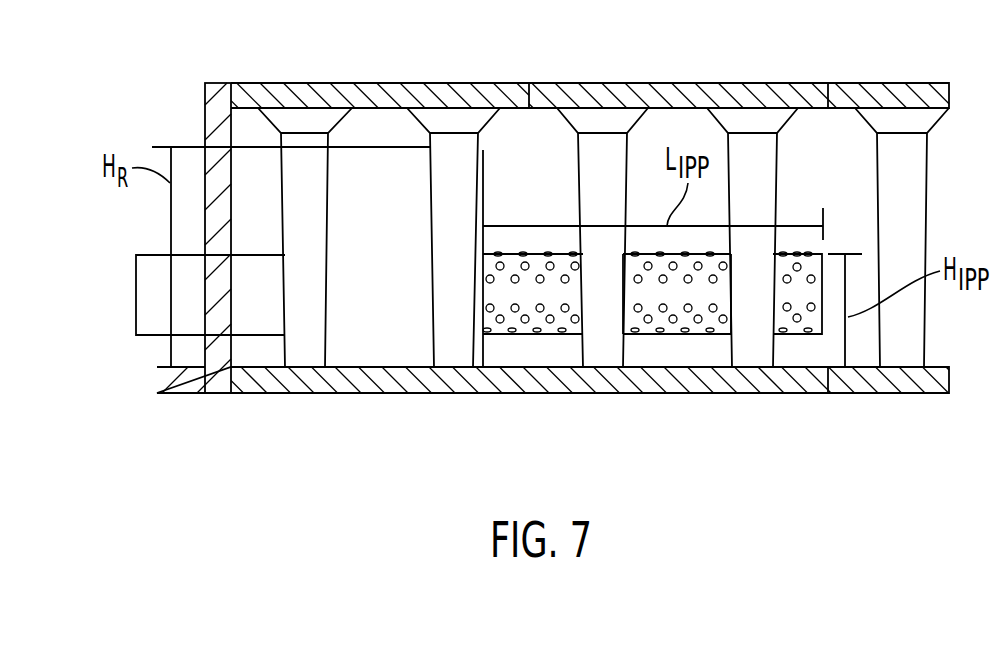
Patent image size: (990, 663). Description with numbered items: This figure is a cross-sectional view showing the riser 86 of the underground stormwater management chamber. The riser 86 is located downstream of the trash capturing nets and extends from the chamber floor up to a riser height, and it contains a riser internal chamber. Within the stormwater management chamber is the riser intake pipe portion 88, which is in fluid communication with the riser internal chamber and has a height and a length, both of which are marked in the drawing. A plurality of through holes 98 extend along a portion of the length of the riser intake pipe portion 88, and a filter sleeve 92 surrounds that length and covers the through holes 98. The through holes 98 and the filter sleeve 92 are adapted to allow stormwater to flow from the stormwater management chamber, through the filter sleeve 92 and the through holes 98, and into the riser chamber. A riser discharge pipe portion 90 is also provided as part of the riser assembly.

The riser 86 is at (358, 147).
The riser intake pipe portion 88 is at (642, 325).
The riser discharge pipe portion 90 is at (146, 273).
The filter sleeve 92 is at (693, 324).
The through holes 98 is at (500, 322).